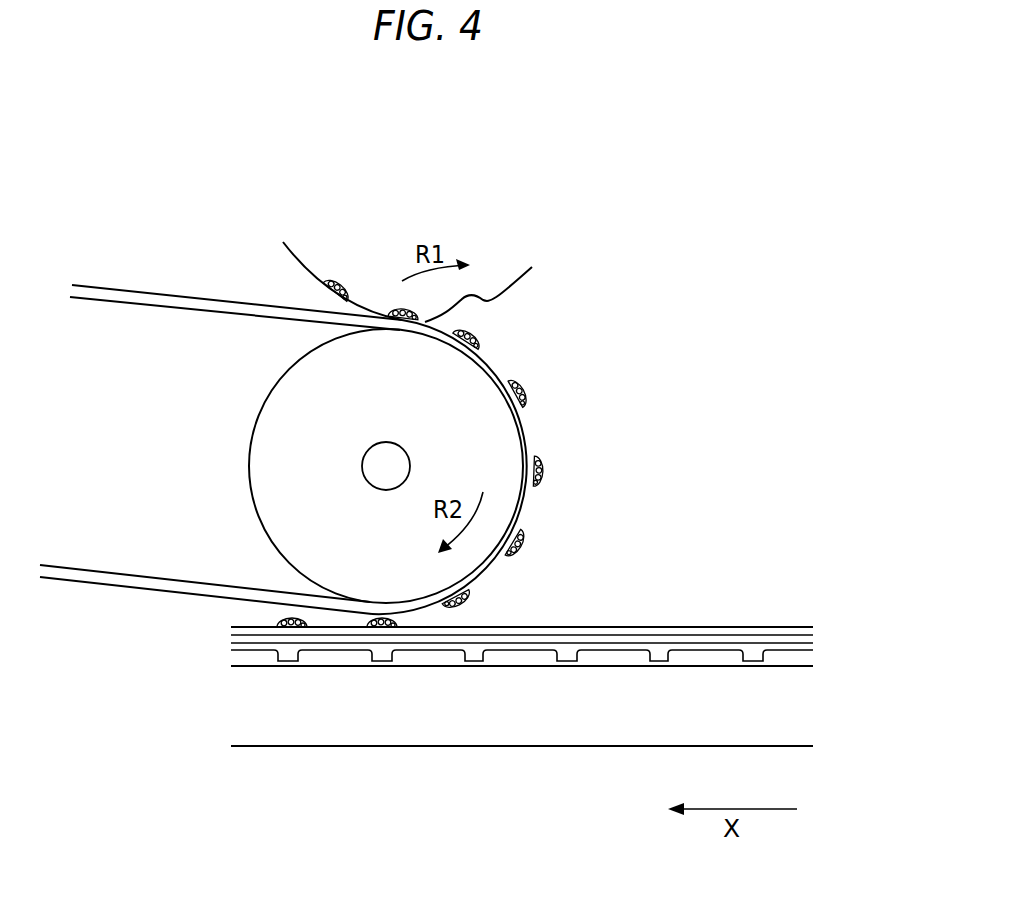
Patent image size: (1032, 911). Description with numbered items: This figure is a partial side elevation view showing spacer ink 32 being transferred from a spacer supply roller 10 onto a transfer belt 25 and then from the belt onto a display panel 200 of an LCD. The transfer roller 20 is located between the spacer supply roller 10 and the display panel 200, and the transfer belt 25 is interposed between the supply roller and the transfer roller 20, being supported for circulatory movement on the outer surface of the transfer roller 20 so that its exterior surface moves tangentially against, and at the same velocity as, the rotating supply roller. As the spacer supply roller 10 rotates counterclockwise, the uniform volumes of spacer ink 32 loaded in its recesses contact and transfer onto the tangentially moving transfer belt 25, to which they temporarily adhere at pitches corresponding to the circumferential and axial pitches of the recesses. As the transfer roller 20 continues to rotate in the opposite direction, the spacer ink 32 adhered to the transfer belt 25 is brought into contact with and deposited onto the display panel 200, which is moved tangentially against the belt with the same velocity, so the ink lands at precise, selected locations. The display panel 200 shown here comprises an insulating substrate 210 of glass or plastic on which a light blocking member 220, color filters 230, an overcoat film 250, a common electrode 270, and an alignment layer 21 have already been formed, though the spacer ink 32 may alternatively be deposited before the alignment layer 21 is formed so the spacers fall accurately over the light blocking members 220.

The spacer supply roller 10 is at (505, 280).
The transfer roller 20 is at (493, 440).
The alignment layer 21 is at (612, 630).
The transfer belt 25 is at (182, 302).
The spacer ink 32 is at (527, 390).
The display panel 200 is at (577, 696).
The insulating substrate 210 is at (793, 705).
The light blocking member 220 is at (473, 660).
The color filter 230 is at (412, 660).
The overcoat film 250 is at (508, 650).
The common electrode 270 is at (532, 640).